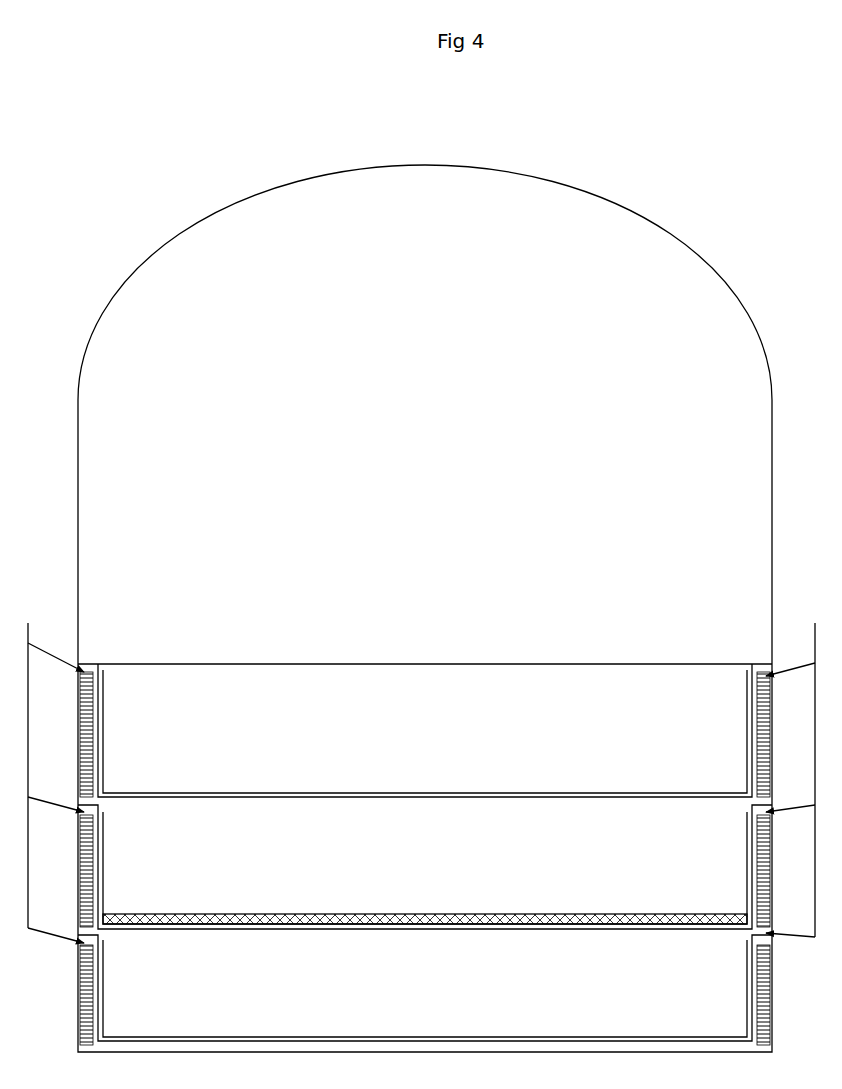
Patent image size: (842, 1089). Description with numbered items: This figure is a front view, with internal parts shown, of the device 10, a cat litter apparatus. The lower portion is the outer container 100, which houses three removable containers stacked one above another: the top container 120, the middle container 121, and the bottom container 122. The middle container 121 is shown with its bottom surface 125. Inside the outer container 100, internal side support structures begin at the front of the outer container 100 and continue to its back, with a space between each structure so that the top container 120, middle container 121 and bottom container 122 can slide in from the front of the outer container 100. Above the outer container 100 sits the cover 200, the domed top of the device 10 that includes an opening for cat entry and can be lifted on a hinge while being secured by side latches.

The device 10 is at (150, 214).
The cover 200 is at (676, 297).
The outer container 100 is at (393, 664).
The top container 120 is at (425, 730).
The middle container 121 is at (425, 867).
The bottom container 122 is at (425, 990).
The bottom surface 125 is at (210, 920).